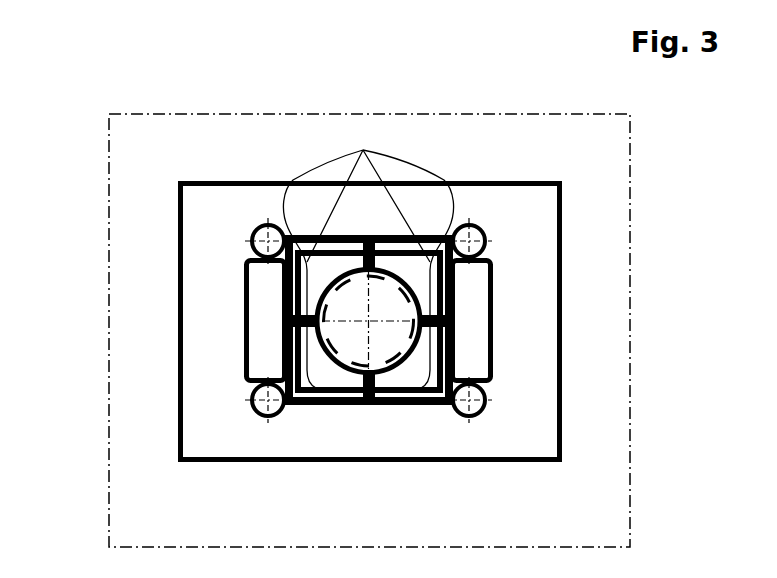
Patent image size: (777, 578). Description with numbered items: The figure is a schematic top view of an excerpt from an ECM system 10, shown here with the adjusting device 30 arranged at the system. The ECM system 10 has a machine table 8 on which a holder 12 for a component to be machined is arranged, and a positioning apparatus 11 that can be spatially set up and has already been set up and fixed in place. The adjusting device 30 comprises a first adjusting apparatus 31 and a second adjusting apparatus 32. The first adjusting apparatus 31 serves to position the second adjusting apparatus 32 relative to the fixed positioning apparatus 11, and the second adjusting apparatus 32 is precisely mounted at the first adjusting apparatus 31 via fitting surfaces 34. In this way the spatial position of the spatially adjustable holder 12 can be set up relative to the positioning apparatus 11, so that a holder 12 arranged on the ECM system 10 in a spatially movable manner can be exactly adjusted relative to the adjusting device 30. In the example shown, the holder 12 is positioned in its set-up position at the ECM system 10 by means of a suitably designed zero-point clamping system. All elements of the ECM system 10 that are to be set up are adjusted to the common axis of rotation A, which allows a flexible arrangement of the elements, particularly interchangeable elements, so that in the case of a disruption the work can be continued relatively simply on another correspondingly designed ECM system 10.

The machine table 8 is at (311, 362).
The ECM system 10 is at (108, 249).
The positioning apparatus 11 is at (368, 254).
The holder 12 is at (346, 367).
The adjusting device 30 is at (422, 428).
The first adjusting apparatus 31 is at (474, 325).
The second adjusting apparatus 32 is at (397, 303).
The fitting surfaces 34 is at (378, 230).
The axis of rotation A is at (368, 321).